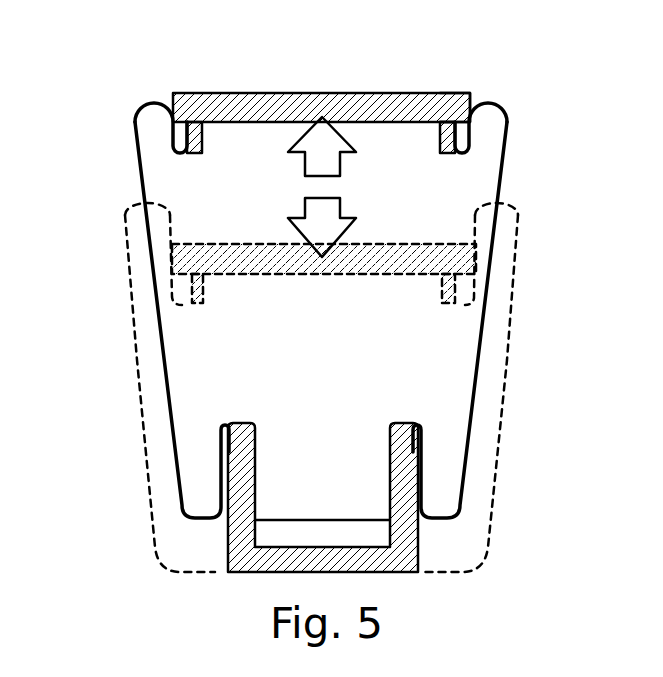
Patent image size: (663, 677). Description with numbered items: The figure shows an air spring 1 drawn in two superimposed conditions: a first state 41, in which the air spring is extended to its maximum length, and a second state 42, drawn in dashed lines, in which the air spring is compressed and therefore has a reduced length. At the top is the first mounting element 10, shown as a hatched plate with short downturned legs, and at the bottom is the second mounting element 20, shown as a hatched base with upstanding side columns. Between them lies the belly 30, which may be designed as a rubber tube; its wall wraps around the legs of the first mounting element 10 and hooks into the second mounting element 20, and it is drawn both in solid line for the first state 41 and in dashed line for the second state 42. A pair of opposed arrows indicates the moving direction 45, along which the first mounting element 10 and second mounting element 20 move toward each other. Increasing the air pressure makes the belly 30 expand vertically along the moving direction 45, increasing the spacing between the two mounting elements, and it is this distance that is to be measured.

The air spring 1 is at (98, 273).
The first mounting element 10 is at (202, 103).
The second mounting element 20 is at (265, 567).
The belly 30 is at (485, 311).
The first state of the air spring 41 is at (463, 100).
The second state of the air spring 42 is at (420, 243).
The moving direction 45 is at (308, 128).